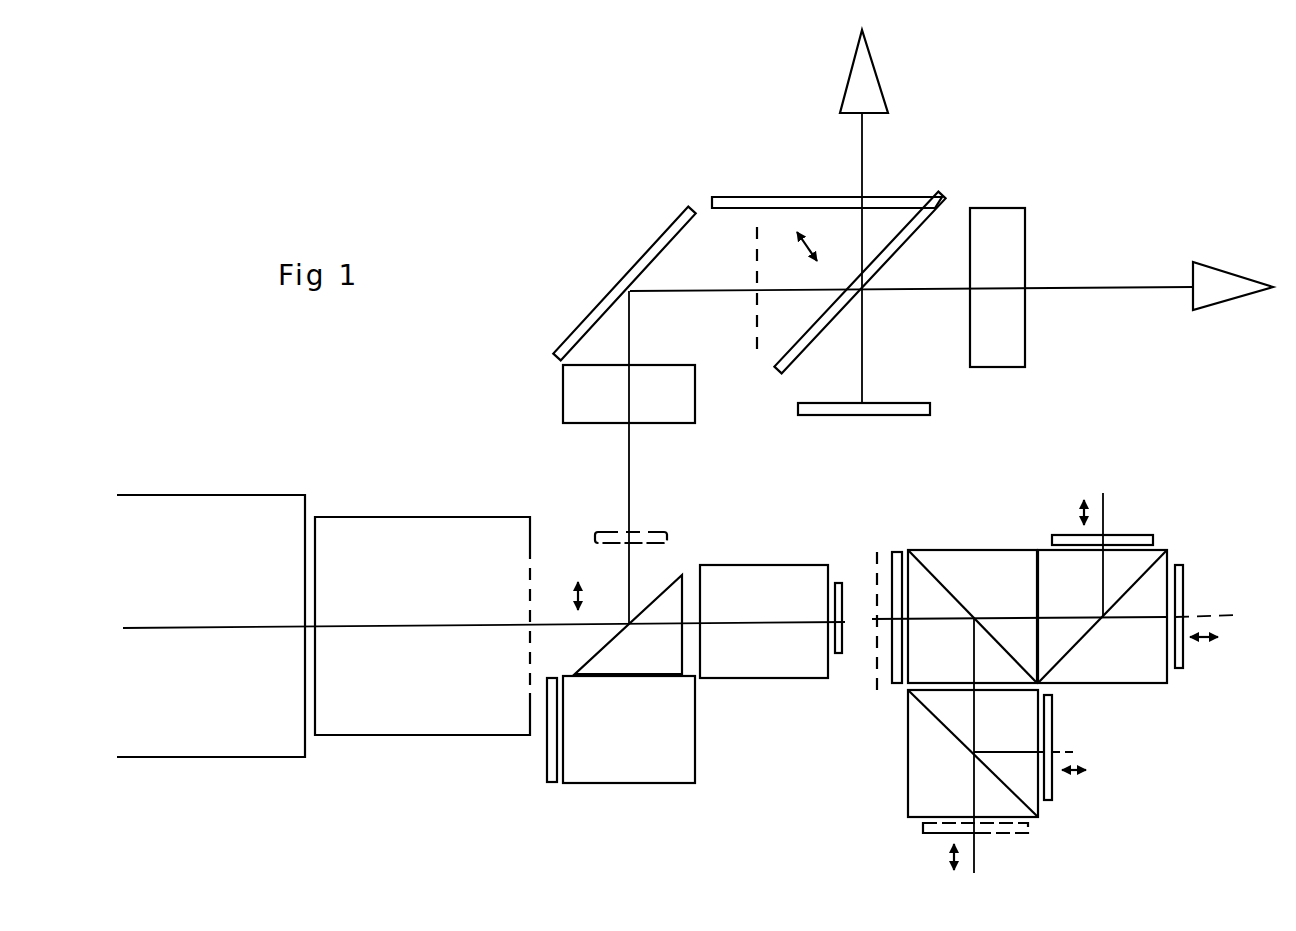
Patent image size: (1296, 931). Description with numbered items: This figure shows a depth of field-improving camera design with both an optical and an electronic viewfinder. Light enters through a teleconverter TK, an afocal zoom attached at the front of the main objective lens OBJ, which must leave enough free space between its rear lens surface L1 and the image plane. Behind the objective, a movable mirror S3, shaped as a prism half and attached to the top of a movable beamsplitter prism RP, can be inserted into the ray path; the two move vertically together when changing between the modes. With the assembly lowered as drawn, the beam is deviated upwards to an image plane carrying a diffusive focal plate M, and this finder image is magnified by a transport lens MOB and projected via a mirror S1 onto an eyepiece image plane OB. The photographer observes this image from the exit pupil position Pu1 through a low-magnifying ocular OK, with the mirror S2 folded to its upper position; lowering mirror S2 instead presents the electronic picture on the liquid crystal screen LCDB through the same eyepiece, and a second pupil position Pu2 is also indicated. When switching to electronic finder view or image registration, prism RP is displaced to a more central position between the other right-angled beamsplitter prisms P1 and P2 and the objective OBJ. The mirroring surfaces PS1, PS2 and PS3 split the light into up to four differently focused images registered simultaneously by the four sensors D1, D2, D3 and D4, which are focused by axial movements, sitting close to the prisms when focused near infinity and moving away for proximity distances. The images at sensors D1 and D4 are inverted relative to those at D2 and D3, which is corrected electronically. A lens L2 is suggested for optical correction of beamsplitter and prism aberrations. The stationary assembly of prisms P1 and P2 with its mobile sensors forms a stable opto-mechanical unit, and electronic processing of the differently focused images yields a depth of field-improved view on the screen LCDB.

The teleconverter TK is at (211, 626).
The objective lens OBJ is at (422, 626).
The rear lens surface L1 is at (535, 580).
The corrective lens L2 is at (546, 778).
The diffusive focal plate M is at (631, 524).
The mirror S1 is at (624, 284).
The mirror S2 is at (859, 283).
The movable mirror S3 is at (628, 624).
The eyepiece image plane OB is at (827, 277).
The transport lens MOB is at (599, 394).
The liquid crystal screen LCDB is at (864, 424).
The ocular OK is at (997, 306).
The exit pupil position Pu1 is at (1233, 276).
The pupil position Pu2 is at (891, 72).
The movable beamsplitter prism RP is at (978, 530).
The beamsplitter prism P1 is at (898, 748).
The beamsplitter prism P2 is at (1116, 700).
The mirroring surface PS1 is at (946, 732).
The mirroring surface PS2 is at (1082, 648).
The mirroring surface PS3 is at (972, 600).
The sensor D1 is at (1116, 522).
The sensor D2 is at (849, 590).
The sensor D3 is at (1062, 732).
The sensor D4 is at (988, 840).